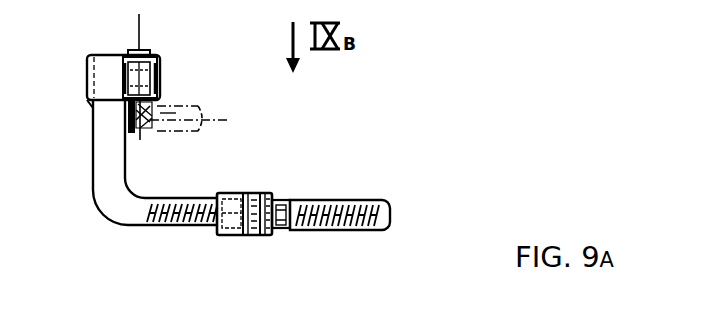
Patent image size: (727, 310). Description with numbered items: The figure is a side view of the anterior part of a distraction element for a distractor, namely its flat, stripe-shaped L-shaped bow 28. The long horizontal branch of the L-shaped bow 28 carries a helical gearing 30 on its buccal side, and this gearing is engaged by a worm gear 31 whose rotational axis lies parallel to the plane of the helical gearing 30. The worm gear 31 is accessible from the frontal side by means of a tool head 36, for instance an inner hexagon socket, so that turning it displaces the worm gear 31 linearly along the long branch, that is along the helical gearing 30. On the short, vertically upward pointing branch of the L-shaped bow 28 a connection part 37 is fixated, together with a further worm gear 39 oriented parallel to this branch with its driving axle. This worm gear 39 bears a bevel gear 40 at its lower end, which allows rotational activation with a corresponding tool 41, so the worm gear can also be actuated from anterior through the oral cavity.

The L-shaped bow 28 is at (331, 190).
The helical gearing 30 is at (169, 213).
The worm gear 31 is at (237, 215).
The tool head 36 is at (286, 219).
The connection part 37 is at (82, 100).
The worm gear 39 is at (158, 57).
The bevel gear 40 is at (145, 125).
The tool 41 is at (180, 112).